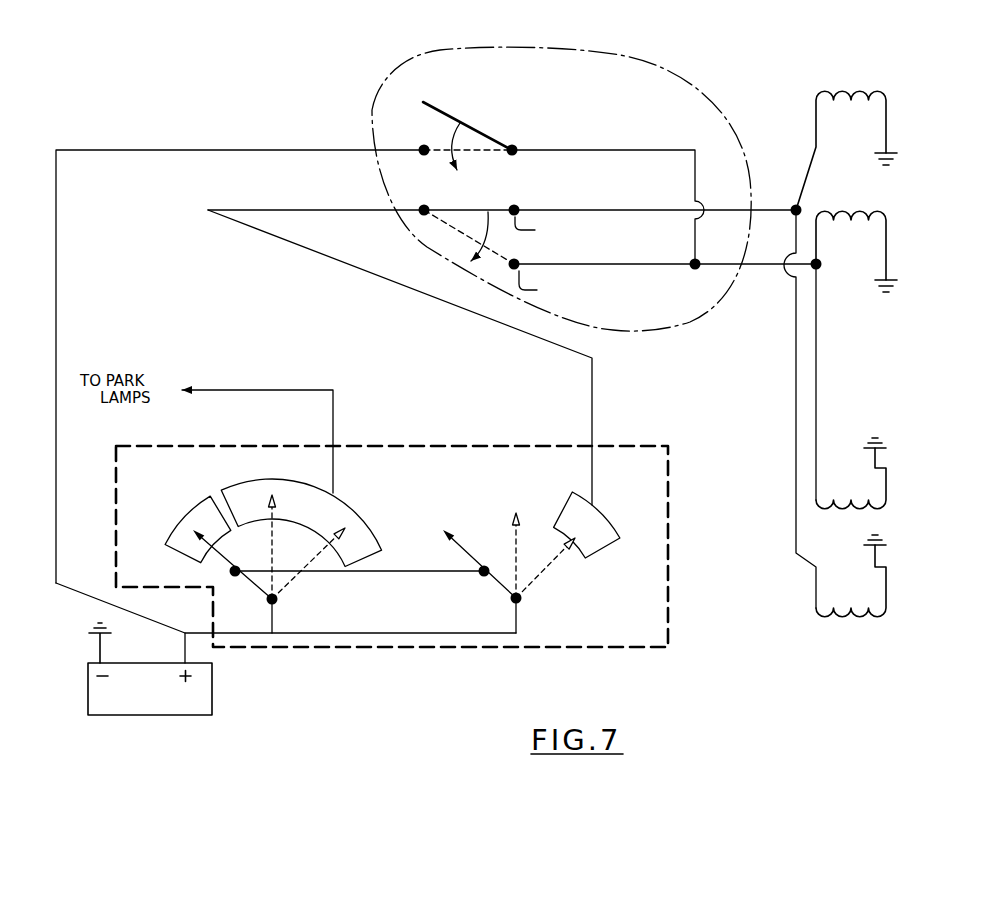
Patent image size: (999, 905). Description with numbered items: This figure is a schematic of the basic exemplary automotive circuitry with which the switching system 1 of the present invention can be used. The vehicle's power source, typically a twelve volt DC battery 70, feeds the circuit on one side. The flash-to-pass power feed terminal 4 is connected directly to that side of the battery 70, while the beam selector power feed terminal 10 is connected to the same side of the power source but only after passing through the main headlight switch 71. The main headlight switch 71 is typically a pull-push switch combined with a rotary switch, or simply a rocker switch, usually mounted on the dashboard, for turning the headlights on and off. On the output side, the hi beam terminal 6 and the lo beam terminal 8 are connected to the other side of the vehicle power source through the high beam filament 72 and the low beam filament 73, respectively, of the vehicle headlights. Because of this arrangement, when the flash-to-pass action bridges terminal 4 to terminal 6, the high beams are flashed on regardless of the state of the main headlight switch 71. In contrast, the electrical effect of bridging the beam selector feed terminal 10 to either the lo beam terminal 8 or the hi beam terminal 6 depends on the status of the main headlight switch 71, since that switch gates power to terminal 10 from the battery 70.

The switching system 1 is at (641, 55).
The flash-to-pass power feed terminal 4 is at (352, 150).
The beam selector power feed terminal 10 is at (345, 210).
The lo beam terminal 8 is at (766, 210).
The hi beam terminal 6 is at (757, 264).
The low beam filament 73 is at (882, 96).
The high beam filament 72 is at (887, 215).
The main headlight switch 71 is at (458, 651).
The battery 70 is at (212, 700).